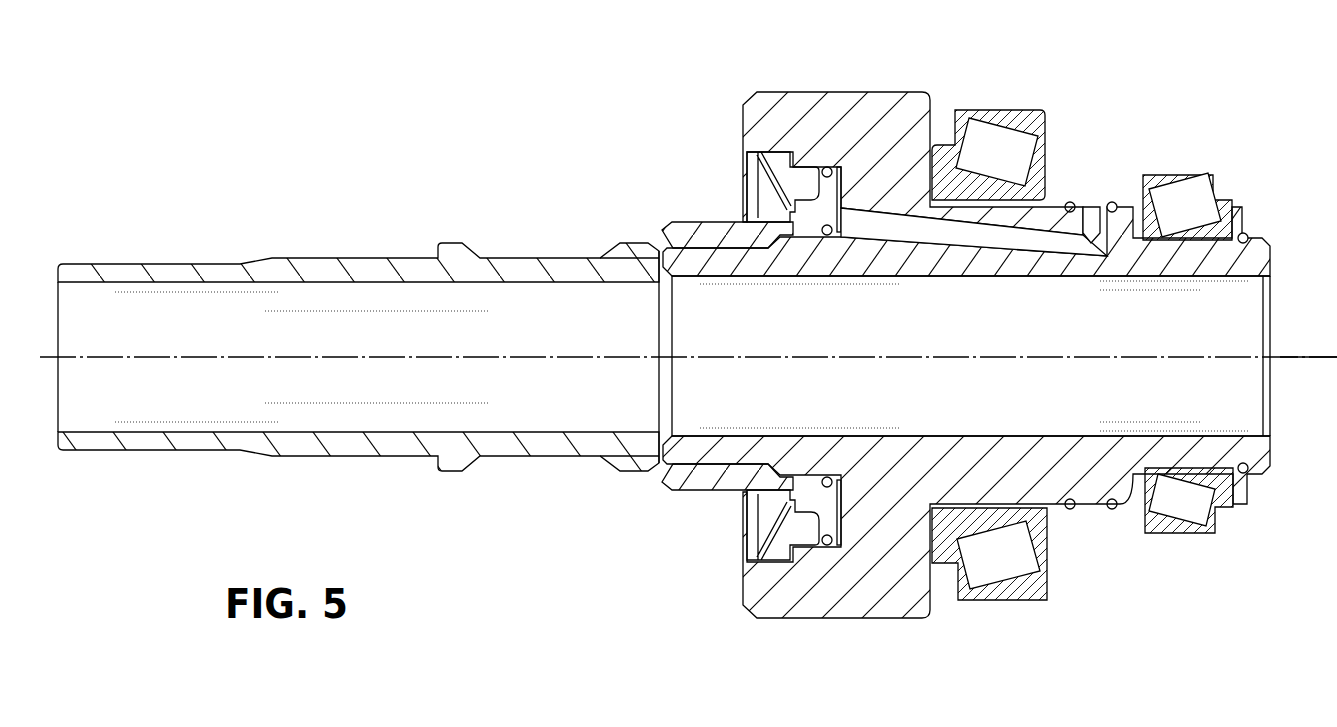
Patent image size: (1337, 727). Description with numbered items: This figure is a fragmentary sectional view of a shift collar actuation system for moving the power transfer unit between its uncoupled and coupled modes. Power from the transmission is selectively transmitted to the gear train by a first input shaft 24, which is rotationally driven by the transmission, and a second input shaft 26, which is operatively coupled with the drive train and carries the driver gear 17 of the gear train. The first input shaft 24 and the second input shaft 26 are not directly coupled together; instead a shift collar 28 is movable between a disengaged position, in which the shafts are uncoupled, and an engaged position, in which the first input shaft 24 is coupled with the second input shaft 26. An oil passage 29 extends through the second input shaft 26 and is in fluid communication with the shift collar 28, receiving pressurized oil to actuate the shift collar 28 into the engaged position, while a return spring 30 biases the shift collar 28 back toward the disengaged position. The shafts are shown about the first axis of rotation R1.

The first input shaft 24 is at (327, 264).
The second input shaft 26 is at (1087, 472).
The driver gear 17 is at (828, 595).
The return spring 30 is at (778, 160).
The shift collar 28 is at (822, 202).
The oil passage 29 is at (1093, 204).
The first axis of rotation R1 is at (1320, 358).